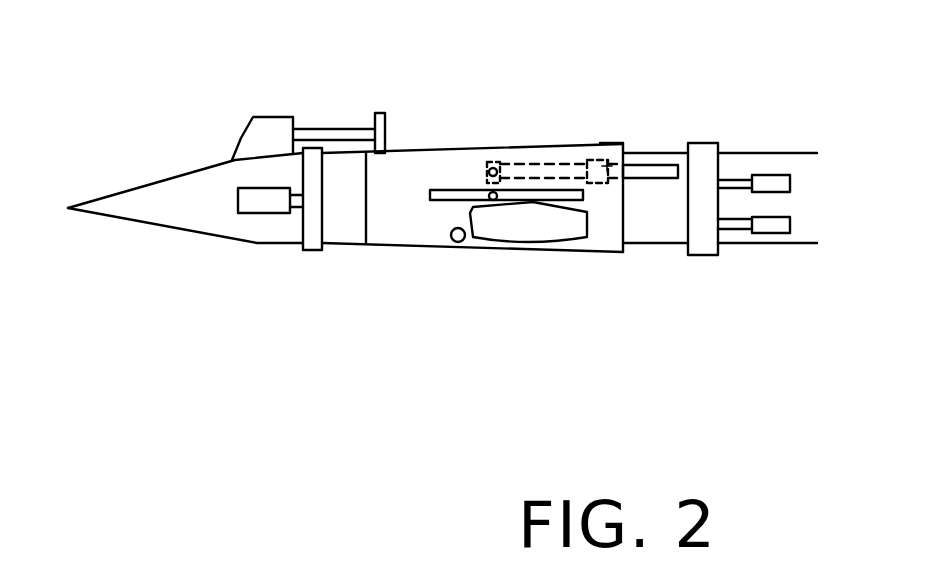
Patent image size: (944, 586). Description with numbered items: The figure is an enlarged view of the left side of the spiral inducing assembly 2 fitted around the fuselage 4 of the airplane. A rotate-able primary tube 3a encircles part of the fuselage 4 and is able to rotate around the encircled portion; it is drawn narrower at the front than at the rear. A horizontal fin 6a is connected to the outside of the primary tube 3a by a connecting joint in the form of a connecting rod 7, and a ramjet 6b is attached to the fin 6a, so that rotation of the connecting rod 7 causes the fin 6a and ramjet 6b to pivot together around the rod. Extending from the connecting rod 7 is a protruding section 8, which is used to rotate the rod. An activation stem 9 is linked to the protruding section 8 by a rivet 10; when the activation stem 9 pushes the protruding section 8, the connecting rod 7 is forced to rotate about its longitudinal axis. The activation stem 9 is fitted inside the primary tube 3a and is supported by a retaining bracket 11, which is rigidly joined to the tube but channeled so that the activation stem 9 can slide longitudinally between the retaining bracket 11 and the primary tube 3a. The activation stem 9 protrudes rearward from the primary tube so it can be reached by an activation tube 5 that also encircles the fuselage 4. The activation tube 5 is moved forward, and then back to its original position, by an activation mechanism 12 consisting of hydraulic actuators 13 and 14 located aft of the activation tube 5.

The spiral inducing assembly 2 is at (467, 308).
The primary tube 3a is at (402, 233).
The fuselage 4 is at (638, 227).
The activation tube 5 is at (707, 152).
The horizontal fin 6a is at (433, 190).
The ramjet 6b is at (532, 225).
The connecting rod 7 is at (495, 200).
The protruding section 8 is at (489, 170).
The activation stem 9 is at (652, 170).
The rivet 10 is at (494, 168).
The retaining bracket 11 is at (592, 160).
The activation mechanism 12 is at (738, 237).
The hydraulic actuator 13 is at (772, 187).
The hydraulic actuator 14 is at (778, 225).